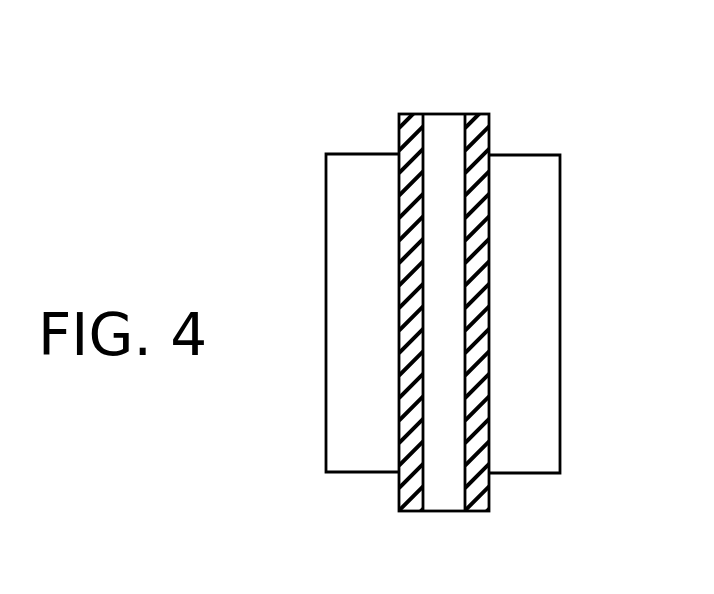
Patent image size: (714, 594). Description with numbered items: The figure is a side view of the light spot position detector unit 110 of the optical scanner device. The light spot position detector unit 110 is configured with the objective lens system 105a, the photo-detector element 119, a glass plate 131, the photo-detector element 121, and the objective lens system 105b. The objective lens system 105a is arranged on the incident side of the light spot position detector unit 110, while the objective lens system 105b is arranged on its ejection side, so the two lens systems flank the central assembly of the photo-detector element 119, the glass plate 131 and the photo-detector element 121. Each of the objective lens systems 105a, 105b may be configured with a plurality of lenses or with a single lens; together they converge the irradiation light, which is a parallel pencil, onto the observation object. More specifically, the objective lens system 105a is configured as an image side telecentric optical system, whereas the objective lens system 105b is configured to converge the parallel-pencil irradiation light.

The light spot position detector unit 110 is at (444, 72).
The photo-detector element 119 is at (413, 128).
The photo-detector element 121 is at (475, 125).
The objective lens system 105a is at (336, 244).
The objective lens system 105b is at (543, 372).
The glass plate 131 is at (443, 500).